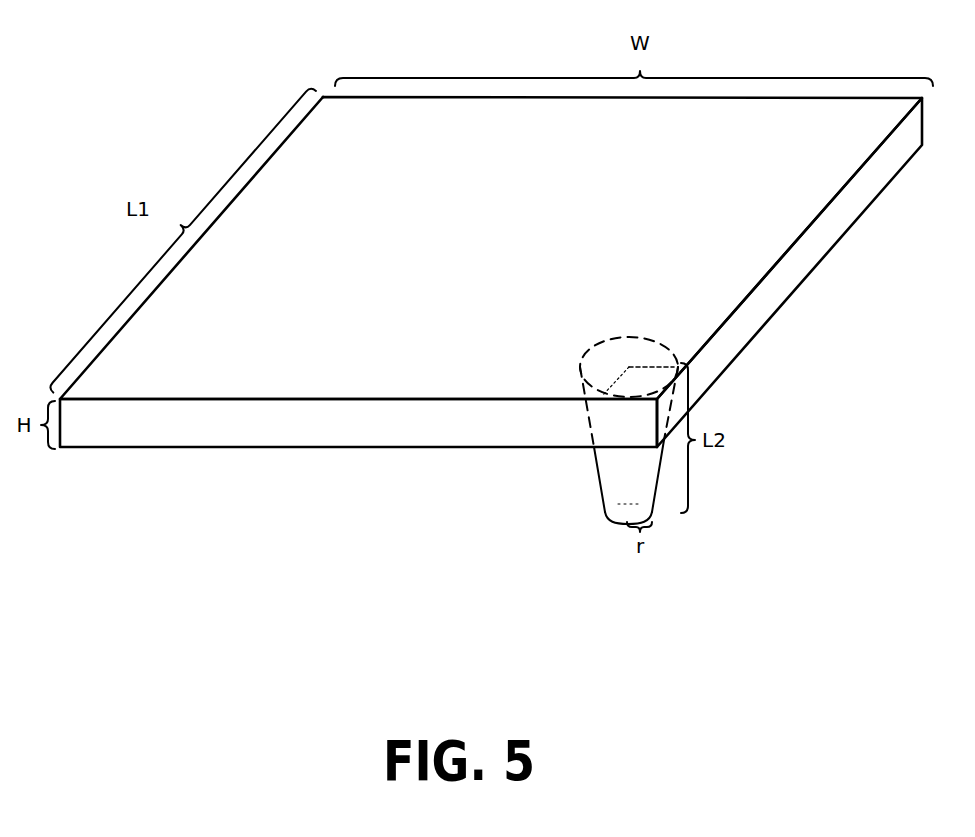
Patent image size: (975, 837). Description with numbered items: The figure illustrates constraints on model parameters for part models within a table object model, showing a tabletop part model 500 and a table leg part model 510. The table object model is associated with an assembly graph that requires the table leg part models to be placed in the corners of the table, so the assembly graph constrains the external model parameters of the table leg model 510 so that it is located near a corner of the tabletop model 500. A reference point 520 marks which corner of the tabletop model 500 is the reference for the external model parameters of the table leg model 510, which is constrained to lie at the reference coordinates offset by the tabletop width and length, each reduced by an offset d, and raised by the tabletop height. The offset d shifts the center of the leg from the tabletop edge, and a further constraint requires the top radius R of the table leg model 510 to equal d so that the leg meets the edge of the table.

The tabletop part model 500 is at (486, 208).
The table leg part model 510 is at (585, 472).
The reference point 520 is at (312, 86).